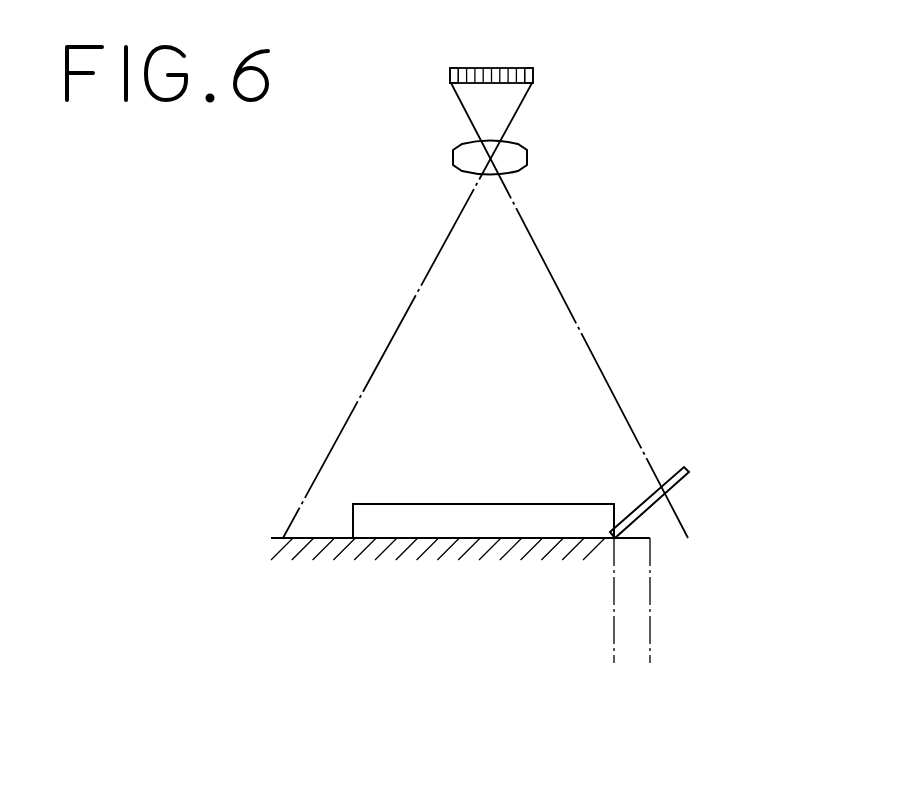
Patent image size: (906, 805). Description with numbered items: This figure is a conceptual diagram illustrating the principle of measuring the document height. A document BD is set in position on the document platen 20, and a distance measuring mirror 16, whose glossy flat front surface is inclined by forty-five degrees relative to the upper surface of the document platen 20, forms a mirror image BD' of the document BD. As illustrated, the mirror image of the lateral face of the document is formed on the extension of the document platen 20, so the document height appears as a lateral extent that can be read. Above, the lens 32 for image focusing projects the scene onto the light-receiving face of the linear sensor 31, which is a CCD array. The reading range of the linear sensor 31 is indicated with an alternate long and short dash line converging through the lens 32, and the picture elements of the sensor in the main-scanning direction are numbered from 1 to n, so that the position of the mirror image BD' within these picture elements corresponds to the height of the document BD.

The linear sensor 31 is at (487, 66).
The first picture element 1 is at (444, 61).
The n-th picture element n is at (537, 60).
The lens 32 is at (527, 158).
The document platen 20 is at (397, 546).
The document BD is at (483, 490).
The mirror image of the document BD' is at (683, 600).
The distance measuring mirror 16 is at (688, 470).